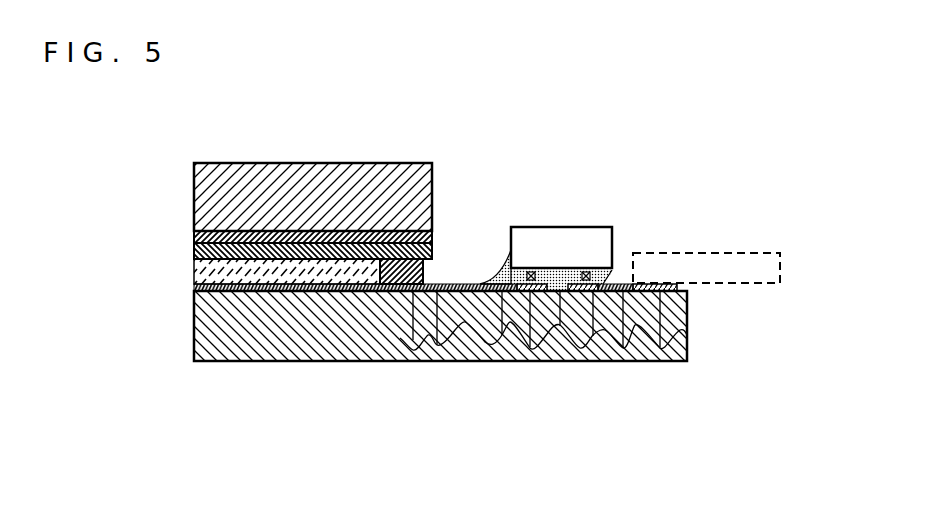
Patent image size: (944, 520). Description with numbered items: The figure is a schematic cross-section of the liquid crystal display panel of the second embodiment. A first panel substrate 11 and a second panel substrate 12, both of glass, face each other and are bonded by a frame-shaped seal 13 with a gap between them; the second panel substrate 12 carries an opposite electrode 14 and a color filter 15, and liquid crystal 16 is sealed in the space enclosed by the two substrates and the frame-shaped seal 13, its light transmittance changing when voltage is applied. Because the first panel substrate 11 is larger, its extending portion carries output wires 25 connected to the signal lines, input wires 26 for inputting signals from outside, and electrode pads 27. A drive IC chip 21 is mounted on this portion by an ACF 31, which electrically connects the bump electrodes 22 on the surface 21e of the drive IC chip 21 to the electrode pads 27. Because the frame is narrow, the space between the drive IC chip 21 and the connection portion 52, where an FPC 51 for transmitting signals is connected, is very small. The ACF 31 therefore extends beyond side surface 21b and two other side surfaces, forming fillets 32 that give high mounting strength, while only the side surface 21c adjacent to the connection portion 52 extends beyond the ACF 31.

The first panel substrate 11 is at (291, 352).
The second panel substrate 12 is at (378, 170).
The frame-shaped seal 13 is at (424, 275).
The opposite electrode 14 is at (194, 252).
The color filter 15 is at (194, 240).
The liquid crystal 16 is at (198, 273).
The drive IC chip 21 is at (565, 227).
The side surface 21b is at (510, 236).
The side surface 21c is at (613, 236).
The surface 21e is at (535, 340).
The bump electrode 22 is at (584, 271).
The output wire 25 is at (412, 330).
The input wire 26 is at (634, 340).
The electrode pad 27 is at (508, 340).
The ACF 31 is at (468, 335).
The fillet 32 is at (502, 264).
The FPC 51 is at (698, 253).
The connection portion 52 is at (678, 340).